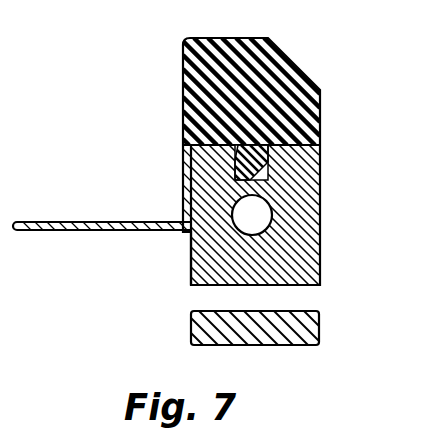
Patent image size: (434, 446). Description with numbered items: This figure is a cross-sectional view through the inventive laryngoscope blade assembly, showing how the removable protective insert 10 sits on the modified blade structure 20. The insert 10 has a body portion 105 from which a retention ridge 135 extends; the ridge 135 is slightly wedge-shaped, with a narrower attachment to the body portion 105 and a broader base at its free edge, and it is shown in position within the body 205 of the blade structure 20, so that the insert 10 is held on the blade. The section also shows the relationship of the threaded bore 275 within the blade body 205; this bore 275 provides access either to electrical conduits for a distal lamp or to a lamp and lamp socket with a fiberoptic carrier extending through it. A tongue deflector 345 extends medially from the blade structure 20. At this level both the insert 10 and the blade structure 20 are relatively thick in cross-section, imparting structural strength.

The removable protective insert 10 is at (133, 83).
The body portion 105 is at (247, 93).
The retention ridge 135 is at (236, 163).
The tongue deflector 345 is at (111, 213).
The blade body portion 205 is at (240, 231).
The threaded bore 275 is at (228, 252).
The modified blade structure 20 is at (171, 316).